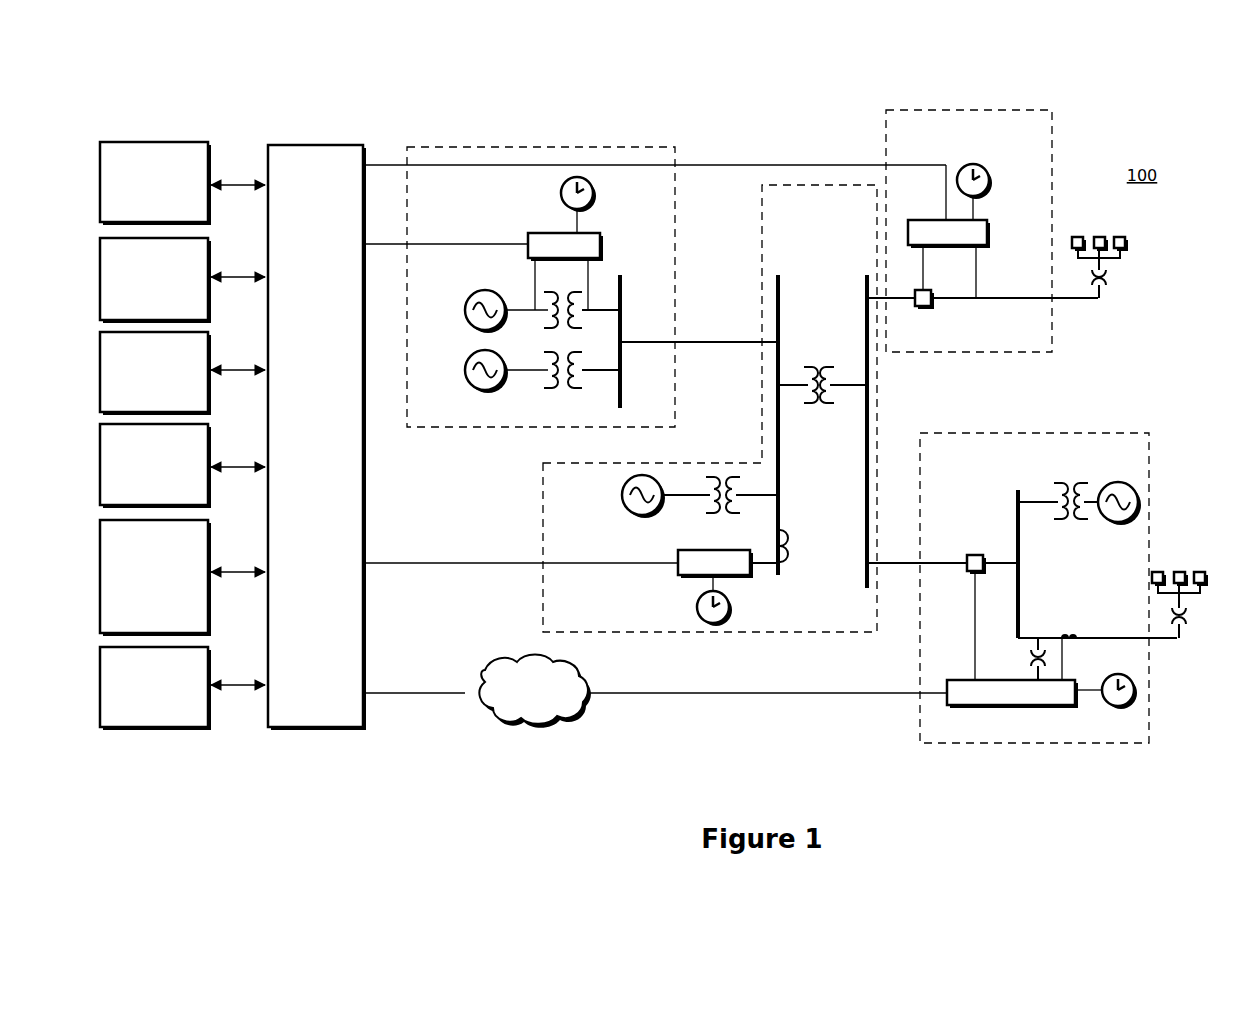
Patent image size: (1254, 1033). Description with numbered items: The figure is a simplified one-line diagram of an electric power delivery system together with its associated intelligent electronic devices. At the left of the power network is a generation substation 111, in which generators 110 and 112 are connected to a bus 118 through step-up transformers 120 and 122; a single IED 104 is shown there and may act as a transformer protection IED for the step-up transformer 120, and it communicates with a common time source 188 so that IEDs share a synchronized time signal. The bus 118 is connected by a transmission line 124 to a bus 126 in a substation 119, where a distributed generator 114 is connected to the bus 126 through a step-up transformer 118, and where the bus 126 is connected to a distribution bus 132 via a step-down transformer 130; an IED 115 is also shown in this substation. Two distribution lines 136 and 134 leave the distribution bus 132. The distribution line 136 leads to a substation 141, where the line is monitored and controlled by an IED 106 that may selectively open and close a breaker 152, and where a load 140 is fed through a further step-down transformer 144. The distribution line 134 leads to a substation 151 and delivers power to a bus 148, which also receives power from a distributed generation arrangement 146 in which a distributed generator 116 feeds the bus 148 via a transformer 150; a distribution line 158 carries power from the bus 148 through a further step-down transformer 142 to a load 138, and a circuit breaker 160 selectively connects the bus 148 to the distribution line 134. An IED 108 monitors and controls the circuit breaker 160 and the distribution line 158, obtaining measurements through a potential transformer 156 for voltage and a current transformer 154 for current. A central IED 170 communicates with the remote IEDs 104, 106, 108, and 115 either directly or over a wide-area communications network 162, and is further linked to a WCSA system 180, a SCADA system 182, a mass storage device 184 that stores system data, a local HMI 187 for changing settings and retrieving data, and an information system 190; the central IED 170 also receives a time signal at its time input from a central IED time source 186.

The IED 104 is at (534, 233).
The IED 106 is at (912, 219).
The IED 108 is at (1078, 708).
The generator 110 is at (465, 310).
The generation substation 111 is at (487, 433).
The generator 112 is at (465, 370).
The generator 114 is at (626, 494).
The IED 115 is at (731, 551).
The distributed generator 116 is at (1112, 522).
The bus 118 is at (622, 392).
The substation 119 is at (670, 633).
The step-up transformer 120 is at (545, 334).
The step-up transformer 122 is at (565, 390).
The transmission line 124 is at (710, 344).
The bus 126 is at (781, 428).
The step-down transformer 130 is at (819, 367).
The distribution bus 132 is at (862, 558).
The distribution line 134 is at (930, 566).
The distribution line 136 is at (900, 300).
The load 138 is at (1177, 572).
The load 140 is at (1128, 242).
The substation 141 is at (1033, 353).
The step-down transformer 142 is at (1188, 618).
The step-down transformer 144 is at (1108, 278).
The distributed generation system 146 is at (1150, 484).
The bus 148 is at (1014, 497).
The transformer 150 is at (1062, 481).
The substation 151 is at (1097, 744).
The breaker 152 is at (933, 306).
The current transformer 154 is at (1070, 642).
The potential transformer 156 is at (1024, 658).
The distribution line 158 is at (1085, 633).
The circuit breaker 160 is at (965, 554).
The wide-area communications network 162 is at (534, 691).
The central IED 170 is at (317, 437).
The WCSA system 180 is at (182, 183).
The SCADA system 182 is at (182, 280).
The mass storage device 184 is at (182, 373).
The central IED time source 186 is at (182, 578).
The local HMI 187 is at (182, 466).
The common time source 188 is at (596, 190).
The information system 190 is at (182, 688).